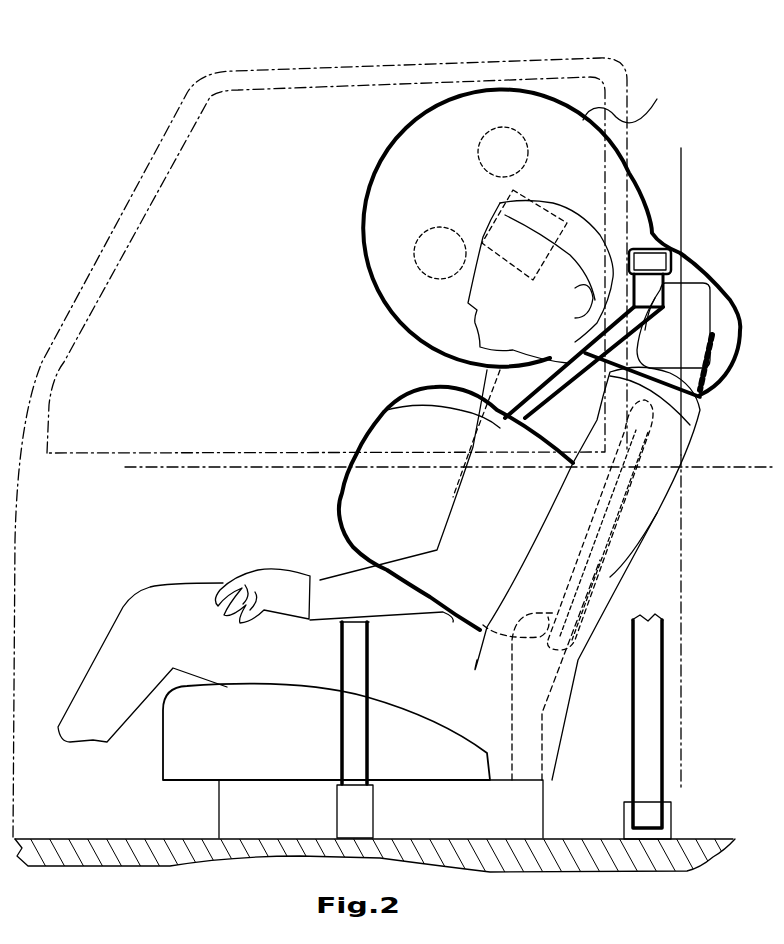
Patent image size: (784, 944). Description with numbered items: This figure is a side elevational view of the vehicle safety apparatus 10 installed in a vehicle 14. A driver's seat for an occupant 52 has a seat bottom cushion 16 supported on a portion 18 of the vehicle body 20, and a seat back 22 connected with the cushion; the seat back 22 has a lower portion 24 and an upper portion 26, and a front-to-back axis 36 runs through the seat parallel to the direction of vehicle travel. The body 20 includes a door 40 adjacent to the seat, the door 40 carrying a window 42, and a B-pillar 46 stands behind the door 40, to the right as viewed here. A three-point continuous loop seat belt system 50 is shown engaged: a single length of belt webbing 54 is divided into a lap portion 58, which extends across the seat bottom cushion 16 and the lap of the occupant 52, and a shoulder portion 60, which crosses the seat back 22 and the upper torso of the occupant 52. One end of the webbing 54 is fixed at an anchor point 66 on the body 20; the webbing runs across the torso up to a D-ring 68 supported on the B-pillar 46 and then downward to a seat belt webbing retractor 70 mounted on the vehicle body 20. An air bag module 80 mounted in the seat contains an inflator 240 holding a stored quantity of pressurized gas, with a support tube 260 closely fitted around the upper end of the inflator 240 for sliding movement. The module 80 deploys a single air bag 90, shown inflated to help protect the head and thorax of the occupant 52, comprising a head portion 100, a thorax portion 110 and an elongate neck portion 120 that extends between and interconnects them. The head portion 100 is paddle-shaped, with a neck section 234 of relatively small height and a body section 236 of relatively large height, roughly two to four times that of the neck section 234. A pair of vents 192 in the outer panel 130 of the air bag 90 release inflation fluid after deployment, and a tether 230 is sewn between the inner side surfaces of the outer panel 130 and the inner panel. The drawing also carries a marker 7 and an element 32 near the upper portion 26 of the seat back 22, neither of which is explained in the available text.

The vehicle safety apparatus 10 is at (160, 517).
The vehicle 14 is at (82, 830).
The seat bottom cushion 16 is at (162, 740).
The portion of the vehicle body 18 is at (157, 837).
The vehicle body 20 is at (190, 868).
The seat back 22 is at (565, 725).
The lower portion of the seat back 24 is at (582, 663).
The upper portion of the seat back 26 is at (688, 435).
The head rest 32 is at (705, 287).
The front-to-back axis 36 is at (705, 470).
The door 40 is at (165, 168).
The window 42 is at (177, 242).
The B-pillar 46 is at (683, 150).
The seat belt system 50 is at (670, 673).
The occupant 52 is at (123, 605).
The belt webbing 54 is at (650, 632).
The lap portion 58 is at (350, 657).
The shoulder portion 60 is at (384, 411).
The anchor point 66 is at (352, 813).
The D-ring 68 is at (672, 260).
The seat belt webbing retractor 70 is at (668, 818).
The air bag module 80 is at (653, 513).
The air bag 90 is at (303, 255).
The head portion 100 is at (382, 150).
The thorax portion 110 is at (340, 523).
The neck portion 120 is at (700, 422).
The outer panel 130 is at (397, 435).
The vents 192 is at (490, 130).
The tether 230 is at (508, 197).
The neck section 234 is at (697, 260).
The body section 236 is at (632, 100).
The inflator 240 is at (575, 543).
The support tube 260 is at (716, 370).
The section line 7- 7 is at (547, 475).